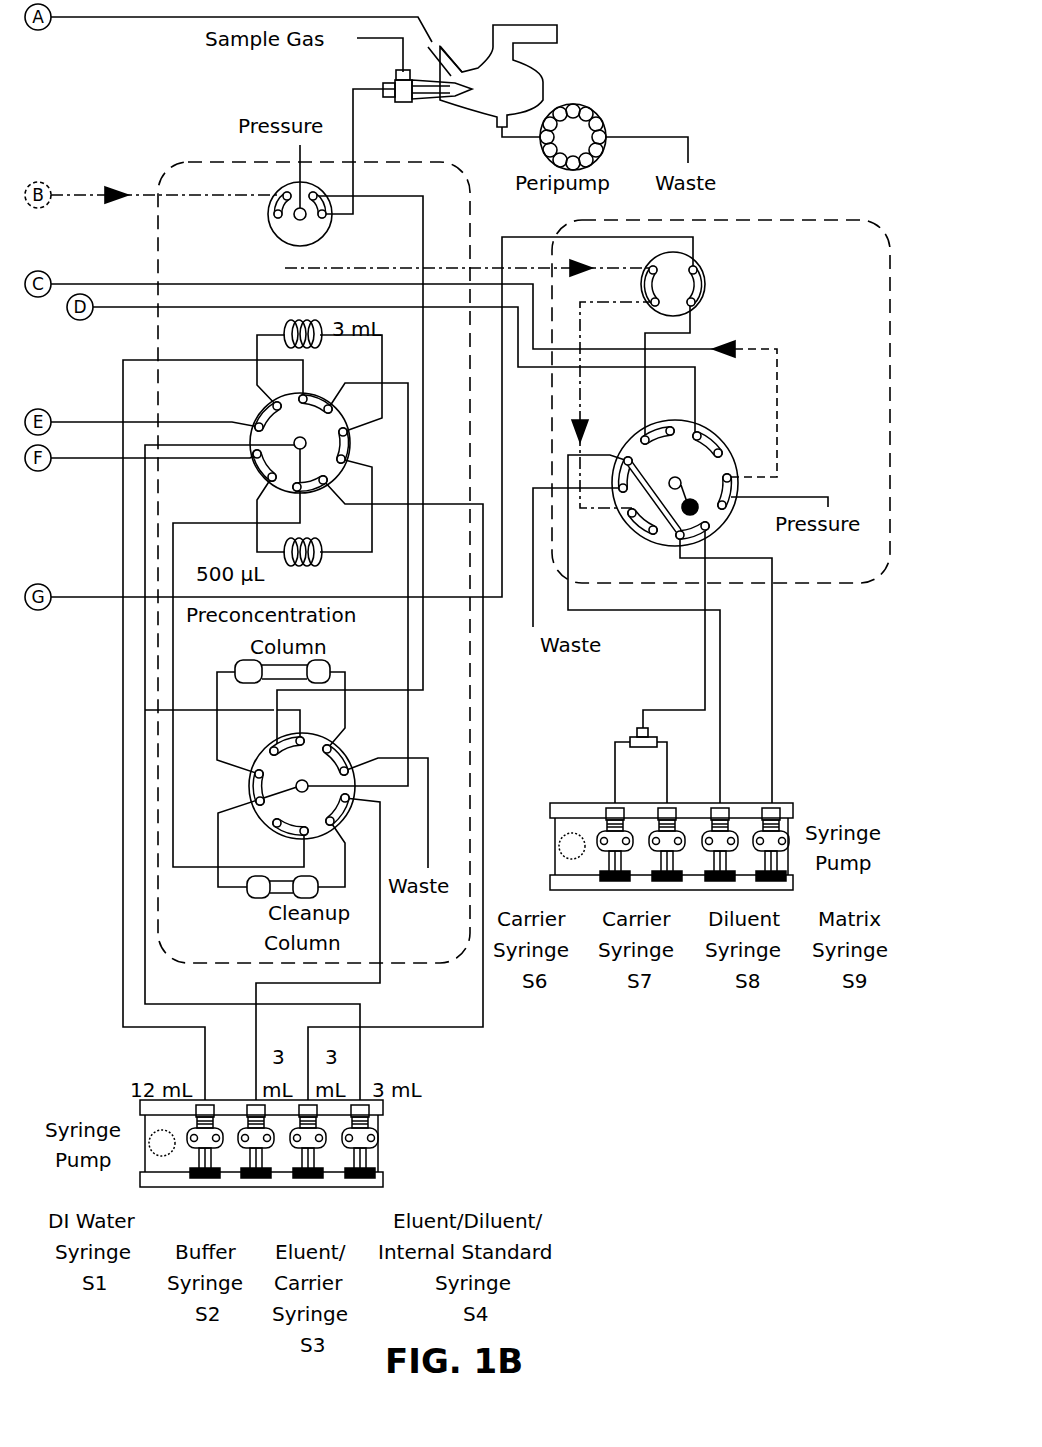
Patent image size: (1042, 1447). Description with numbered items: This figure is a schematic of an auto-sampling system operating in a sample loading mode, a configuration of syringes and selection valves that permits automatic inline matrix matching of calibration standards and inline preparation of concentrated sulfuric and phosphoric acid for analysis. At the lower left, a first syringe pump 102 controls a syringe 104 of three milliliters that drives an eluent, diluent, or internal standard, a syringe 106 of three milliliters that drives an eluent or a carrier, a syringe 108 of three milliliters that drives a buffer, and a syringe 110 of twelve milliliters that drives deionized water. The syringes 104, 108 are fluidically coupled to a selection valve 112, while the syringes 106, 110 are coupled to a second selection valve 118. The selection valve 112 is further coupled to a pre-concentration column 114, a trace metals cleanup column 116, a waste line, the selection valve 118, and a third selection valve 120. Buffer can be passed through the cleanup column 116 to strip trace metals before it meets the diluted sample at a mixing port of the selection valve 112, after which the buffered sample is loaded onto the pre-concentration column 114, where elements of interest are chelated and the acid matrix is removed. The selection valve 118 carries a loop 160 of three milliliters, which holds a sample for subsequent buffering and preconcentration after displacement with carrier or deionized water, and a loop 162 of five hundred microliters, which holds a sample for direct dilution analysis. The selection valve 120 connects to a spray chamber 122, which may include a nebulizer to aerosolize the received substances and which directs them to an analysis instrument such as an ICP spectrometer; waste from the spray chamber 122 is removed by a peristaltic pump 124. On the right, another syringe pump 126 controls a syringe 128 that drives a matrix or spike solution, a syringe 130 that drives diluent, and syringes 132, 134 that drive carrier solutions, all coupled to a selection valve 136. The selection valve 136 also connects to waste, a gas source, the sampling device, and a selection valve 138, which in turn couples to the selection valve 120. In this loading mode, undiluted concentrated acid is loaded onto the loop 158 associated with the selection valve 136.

The first syringe pump 102 is at (138, 1105).
The syringe 104 is at (372, 1163).
The syringe 106 is at (306, 1185).
The syringe 108 is at (255, 1185).
The syringe 110 is at (220, 1108).
The selection valve 112 is at (352, 762).
The pre-concentration column 114 is at (340, 664).
The trace metals cleanup column 116 is at (252, 897).
The selection valve 118 is at (252, 418).
The selection valve 120 is at (281, 232).
The spray chamber 122 is at (475, 68).
The pump 124 is at (583, 105).
The syringe pump 126 is at (788, 805).
The syringe 128 is at (764, 808).
The syringe 130 is at (713, 806).
The syringe 132 is at (660, 808).
The syringe 134 is at (607, 806).
The selection valve 136 is at (630, 440).
The selection valve 138 is at (708, 290).
The loop 158 is at (730, 520).
The loop 160 is at (283, 325).
The loop 162 is at (318, 562).